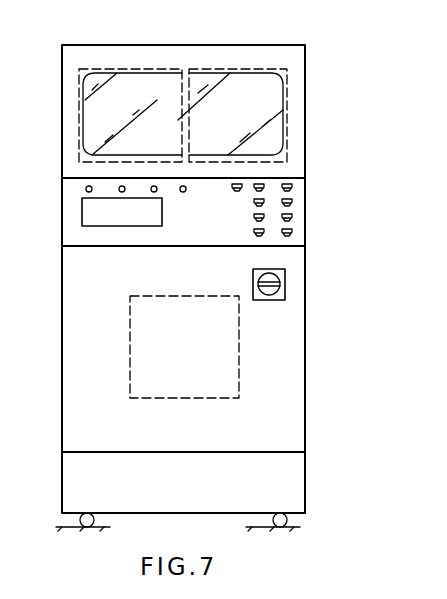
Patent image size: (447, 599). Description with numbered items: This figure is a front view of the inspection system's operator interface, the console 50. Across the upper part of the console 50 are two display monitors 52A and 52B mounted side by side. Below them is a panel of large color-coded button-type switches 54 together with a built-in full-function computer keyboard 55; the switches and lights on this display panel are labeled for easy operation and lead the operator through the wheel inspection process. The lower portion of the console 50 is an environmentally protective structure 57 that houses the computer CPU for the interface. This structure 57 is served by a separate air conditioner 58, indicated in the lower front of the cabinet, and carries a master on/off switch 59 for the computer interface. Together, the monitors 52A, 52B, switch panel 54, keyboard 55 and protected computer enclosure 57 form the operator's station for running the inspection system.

The console 50 is at (313, 137).
The display monitor 52A is at (127, 68).
The display monitor 52B is at (215, 68).
The panel of large color-coded button-type switches 54 is at (257, 203).
The computer keyboard 55 is at (82, 214).
The environmentally protective structure 57 is at (306, 367).
The air conditioner 58 is at (160, 398).
The master on/off switch 59 is at (285, 284).